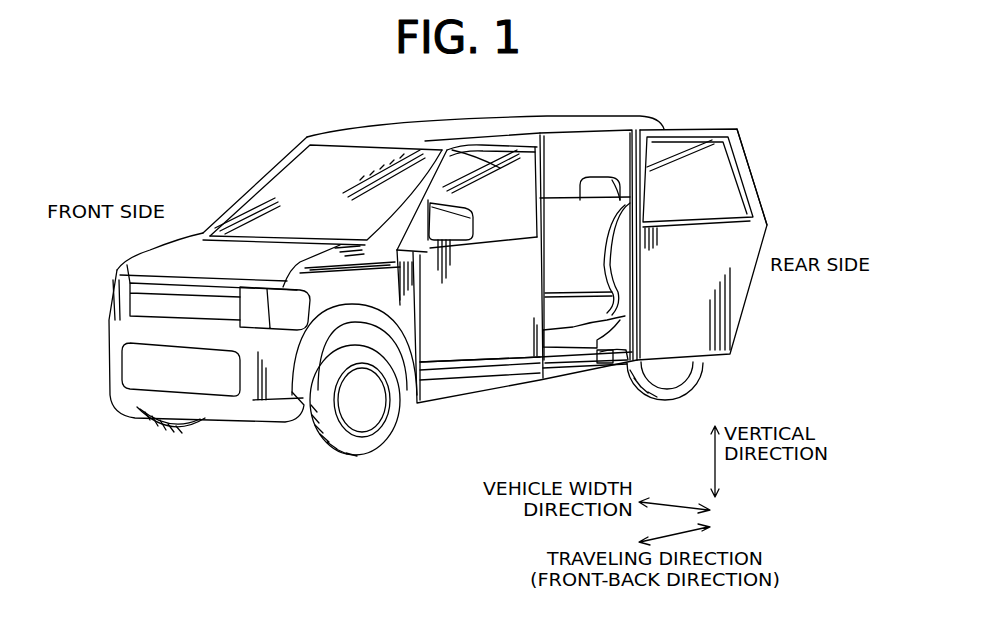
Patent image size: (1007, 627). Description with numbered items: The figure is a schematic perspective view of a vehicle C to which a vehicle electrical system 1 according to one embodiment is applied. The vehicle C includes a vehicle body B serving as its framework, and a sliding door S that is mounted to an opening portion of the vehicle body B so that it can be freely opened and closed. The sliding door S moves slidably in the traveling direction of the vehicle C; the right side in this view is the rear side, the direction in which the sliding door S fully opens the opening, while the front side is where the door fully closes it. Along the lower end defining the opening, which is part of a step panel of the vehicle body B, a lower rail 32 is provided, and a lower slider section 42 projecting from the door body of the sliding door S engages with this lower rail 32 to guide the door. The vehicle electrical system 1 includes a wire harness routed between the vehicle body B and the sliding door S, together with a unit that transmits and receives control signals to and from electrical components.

The vehicle electrical system 1 is at (585, 380).
The lower rail 32 is at (550, 388).
The lower slider section 42 is at (620, 381).
The vehicle body B is at (600, 118).
The vehicle C is at (659, 111).
The sliding door S is at (740, 246).